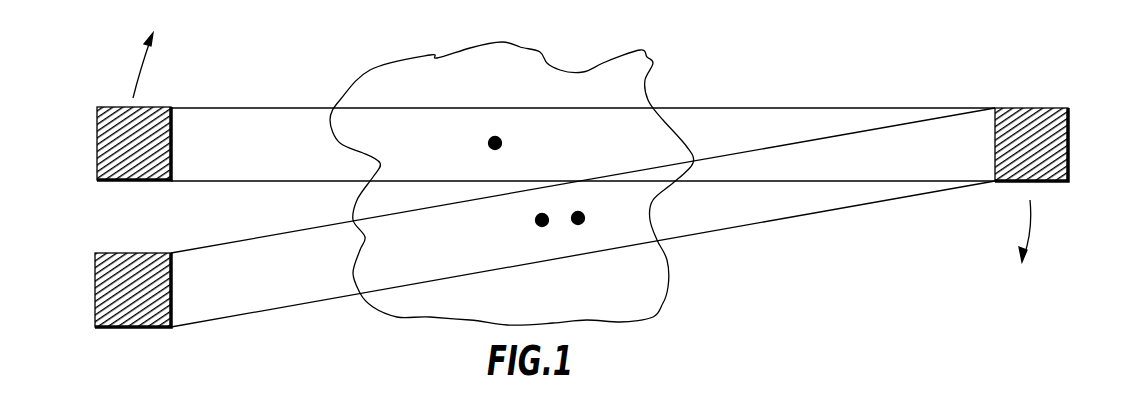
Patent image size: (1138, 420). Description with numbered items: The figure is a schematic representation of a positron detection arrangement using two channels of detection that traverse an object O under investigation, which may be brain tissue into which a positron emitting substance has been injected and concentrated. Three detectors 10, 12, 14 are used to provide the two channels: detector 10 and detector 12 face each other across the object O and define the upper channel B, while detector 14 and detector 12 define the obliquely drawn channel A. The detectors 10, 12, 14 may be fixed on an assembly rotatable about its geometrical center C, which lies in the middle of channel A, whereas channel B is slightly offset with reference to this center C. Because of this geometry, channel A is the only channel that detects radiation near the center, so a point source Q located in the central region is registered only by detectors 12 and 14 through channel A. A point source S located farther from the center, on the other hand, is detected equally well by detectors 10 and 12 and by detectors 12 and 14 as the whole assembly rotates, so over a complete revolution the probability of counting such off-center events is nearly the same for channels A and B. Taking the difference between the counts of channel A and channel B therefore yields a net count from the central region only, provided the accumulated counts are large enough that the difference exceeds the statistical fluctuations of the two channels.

The detector 10 is at (108, 140).
The detector 12 is at (1047, 147).
The detector 14 is at (107, 298).
The detection channel A is at (212, 302).
The detection channel B is at (216, 136).
The object O is at (635, 73).
The point source S is at (487, 147).
The point source Q is at (534, 225).
The geometrical center C is at (585, 219).